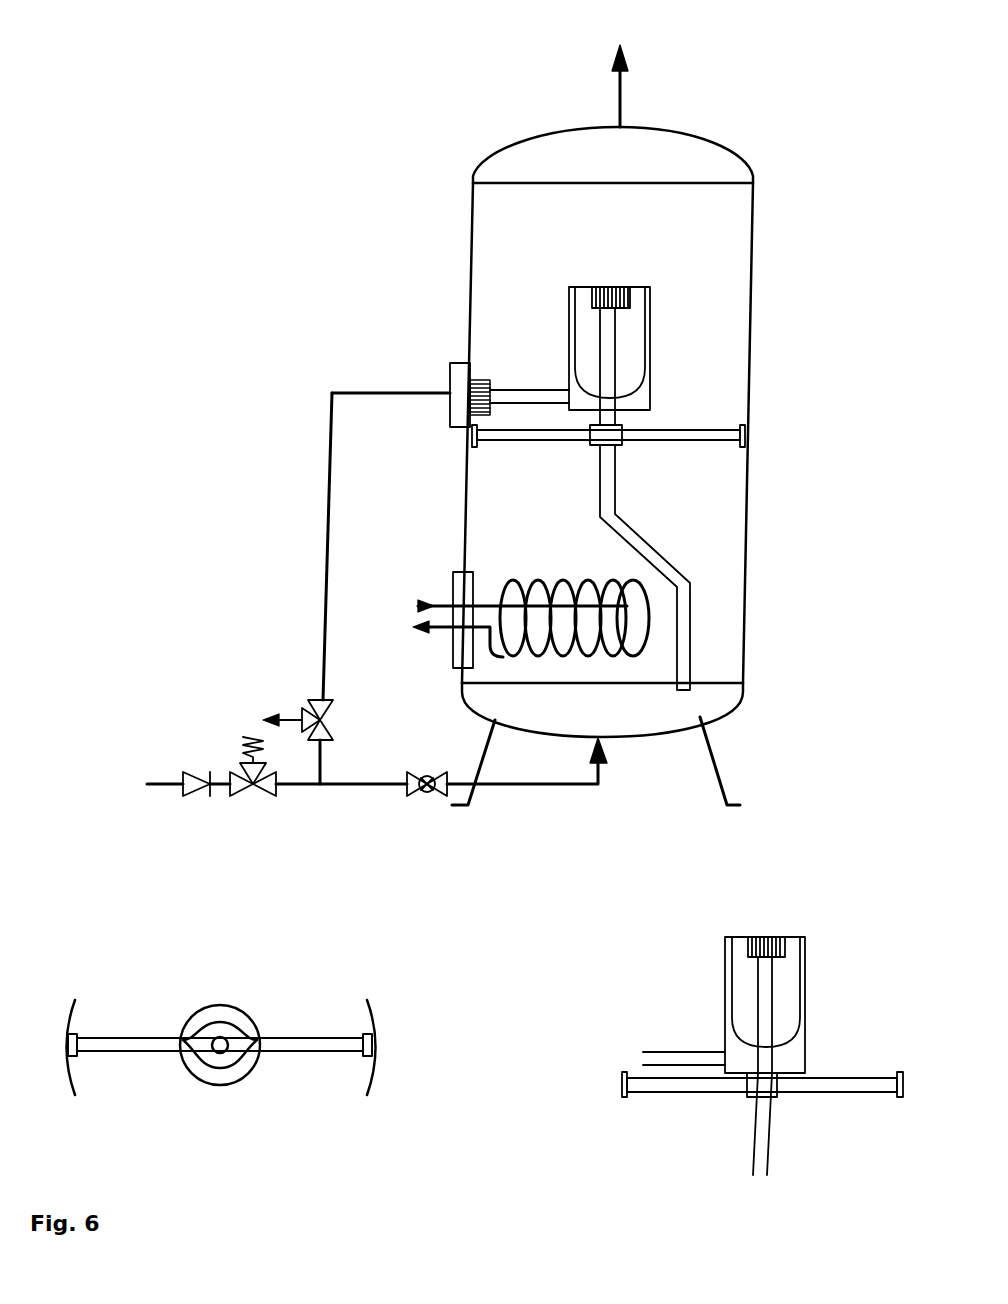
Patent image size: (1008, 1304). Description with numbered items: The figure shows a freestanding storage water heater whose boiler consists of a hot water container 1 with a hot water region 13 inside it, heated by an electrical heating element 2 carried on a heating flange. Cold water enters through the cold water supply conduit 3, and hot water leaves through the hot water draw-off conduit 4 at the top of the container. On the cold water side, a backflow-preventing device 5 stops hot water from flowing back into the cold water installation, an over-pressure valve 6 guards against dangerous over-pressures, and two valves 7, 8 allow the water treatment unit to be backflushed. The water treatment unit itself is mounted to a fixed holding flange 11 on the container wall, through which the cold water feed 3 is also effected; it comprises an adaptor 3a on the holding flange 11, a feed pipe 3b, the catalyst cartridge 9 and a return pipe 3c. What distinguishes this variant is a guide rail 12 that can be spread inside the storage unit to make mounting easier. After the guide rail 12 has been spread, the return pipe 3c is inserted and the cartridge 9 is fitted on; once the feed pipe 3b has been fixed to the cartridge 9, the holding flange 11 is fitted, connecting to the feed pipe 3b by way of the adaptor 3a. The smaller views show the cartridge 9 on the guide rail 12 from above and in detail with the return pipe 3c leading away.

The hot water container 1 is at (753, 255).
The electrical heating element 2 is at (453, 573).
The cold water supply conduit 3 is at (365, 595).
The adaptor 3a is at (480, 385).
The feed pipe 3b is at (530, 385).
The return pipe 3c is at (653, 558).
The hot water draw-off conduit 4 is at (620, 66).
The backflow-preventing device 5 is at (198, 798).
The over-pressure valve 6 is at (262, 803).
The valve 7 is at (307, 700).
The valve 8 is at (405, 810).
The catalyst cartridge 9 is at (652, 313).
The holding flange 11 is at (447, 430).
The guide rail 12 is at (683, 428).
The hot water region 13 is at (707, 317).